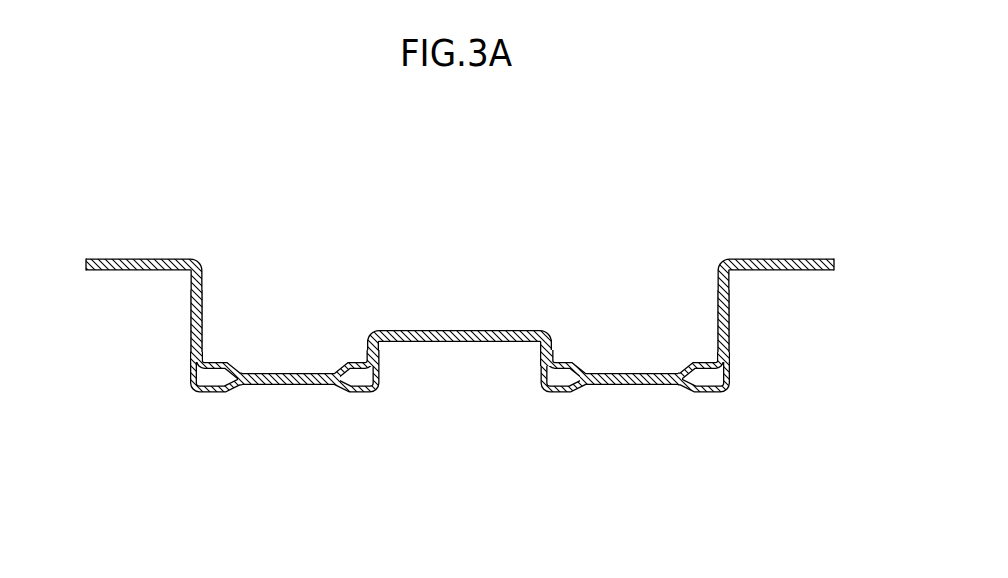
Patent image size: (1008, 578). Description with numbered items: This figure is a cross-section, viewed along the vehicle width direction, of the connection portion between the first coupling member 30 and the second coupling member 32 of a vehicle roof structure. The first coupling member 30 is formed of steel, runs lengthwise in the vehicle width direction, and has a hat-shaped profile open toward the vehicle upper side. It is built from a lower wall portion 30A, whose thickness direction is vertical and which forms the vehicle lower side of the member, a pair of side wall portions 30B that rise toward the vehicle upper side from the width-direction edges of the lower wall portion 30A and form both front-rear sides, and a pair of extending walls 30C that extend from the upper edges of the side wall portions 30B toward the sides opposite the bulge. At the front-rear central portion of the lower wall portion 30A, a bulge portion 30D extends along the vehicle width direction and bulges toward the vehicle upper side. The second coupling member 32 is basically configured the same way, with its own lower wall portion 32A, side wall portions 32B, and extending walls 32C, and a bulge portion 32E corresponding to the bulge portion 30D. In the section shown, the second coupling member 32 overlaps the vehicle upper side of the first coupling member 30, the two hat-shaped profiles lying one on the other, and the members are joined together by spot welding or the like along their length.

The first coupling member 30 is at (553, 415).
The lower wall portion 30A is at (610, 397).
The side wall portions 30B is at (192, 340).
The extending walls 30C is at (122, 272).
The bulge portion 30D is at (478, 342).
The second coupling member 32 is at (504, 260).
The lower wall portion 32A is at (612, 362).
The side wall portions 32B is at (207, 308).
The extending walls 32C is at (127, 258).
The bulge portion 32E is at (430, 330).